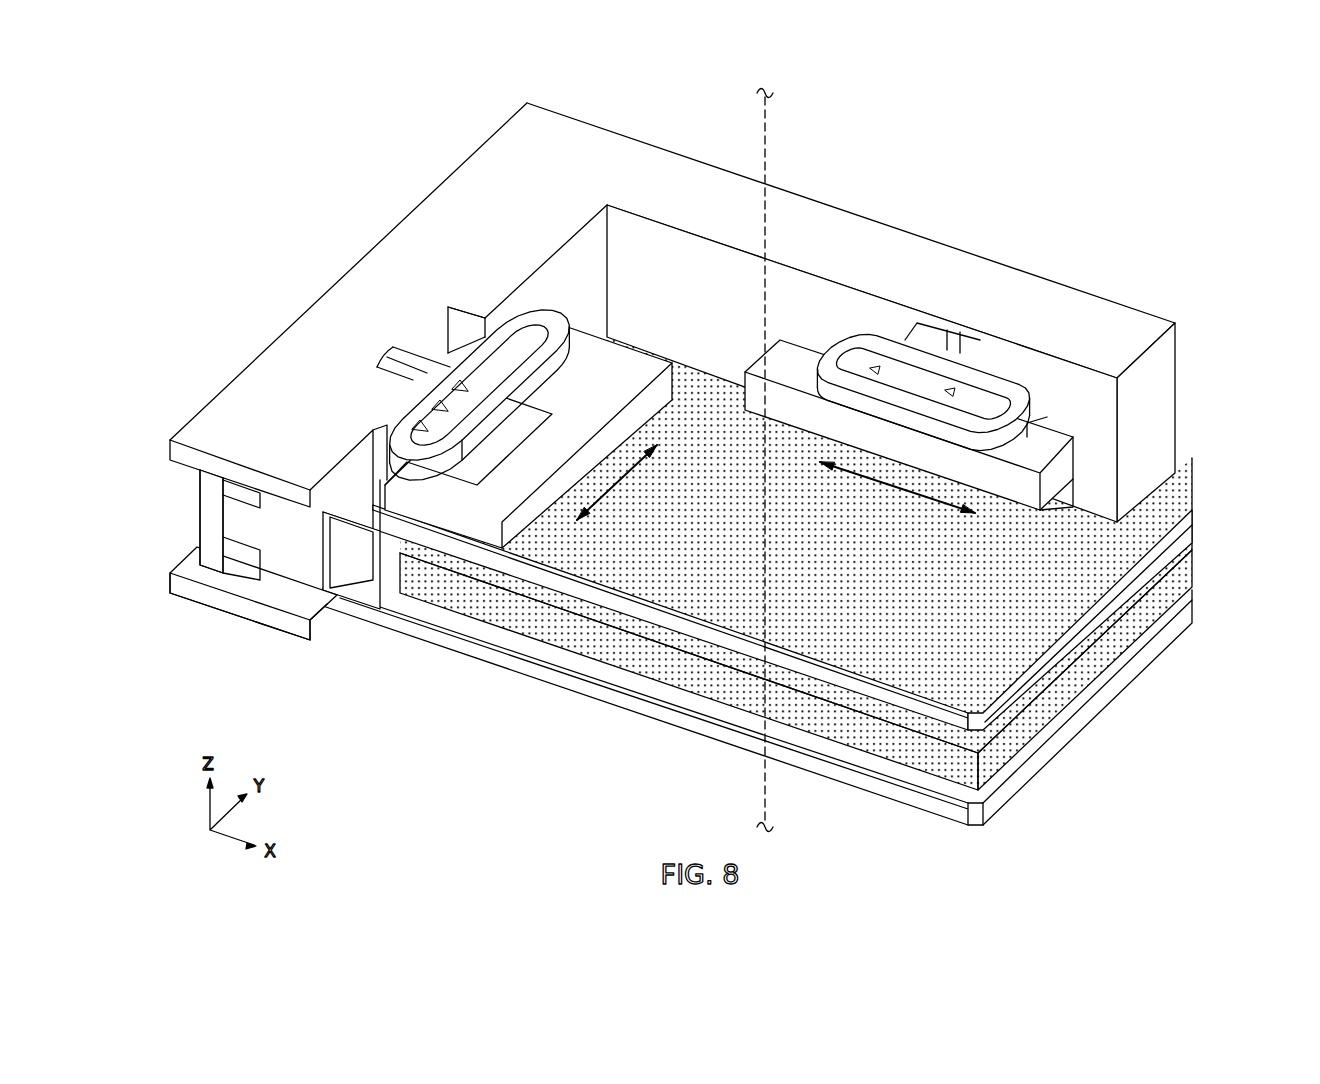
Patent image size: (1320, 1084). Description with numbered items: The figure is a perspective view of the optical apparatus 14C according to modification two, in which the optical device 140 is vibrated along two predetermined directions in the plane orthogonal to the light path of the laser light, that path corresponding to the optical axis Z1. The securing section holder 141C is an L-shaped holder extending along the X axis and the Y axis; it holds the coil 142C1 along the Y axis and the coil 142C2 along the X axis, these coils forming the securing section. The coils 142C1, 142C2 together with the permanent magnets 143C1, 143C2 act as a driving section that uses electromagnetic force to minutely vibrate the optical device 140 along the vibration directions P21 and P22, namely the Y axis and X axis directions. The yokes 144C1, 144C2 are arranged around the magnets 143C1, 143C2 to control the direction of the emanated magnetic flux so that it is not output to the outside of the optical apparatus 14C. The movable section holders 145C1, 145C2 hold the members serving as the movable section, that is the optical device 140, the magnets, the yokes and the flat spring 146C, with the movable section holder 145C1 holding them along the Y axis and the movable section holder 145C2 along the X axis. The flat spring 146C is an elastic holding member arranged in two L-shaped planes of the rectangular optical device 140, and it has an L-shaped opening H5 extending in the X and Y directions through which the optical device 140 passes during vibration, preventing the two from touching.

The optical apparatus 14C is at (1084, 121).
The optical device 140 is at (867, 620).
The securing section holder 141C is at (432, 222).
The coil 142C1 is at (415, 365).
The coil 142C2 is at (997, 358).
The magnet 143C1 is at (423, 420).
The magnet 143C2 is at (890, 357).
The yoke 144C1 is at (522, 335).
The yoke 144C2 is at (1013, 403).
The movable section holder 145C1 is at (440, 482).
The movable section holder 145C2 is at (1057, 487).
The flat spring 146C is at (250, 522).
The opening H5 is at (365, 551).
The vibration direction P21 is at (613, 480).
The vibration direction P22 is at (1070, 607).
The optical axis Z1 is at (770, 126).